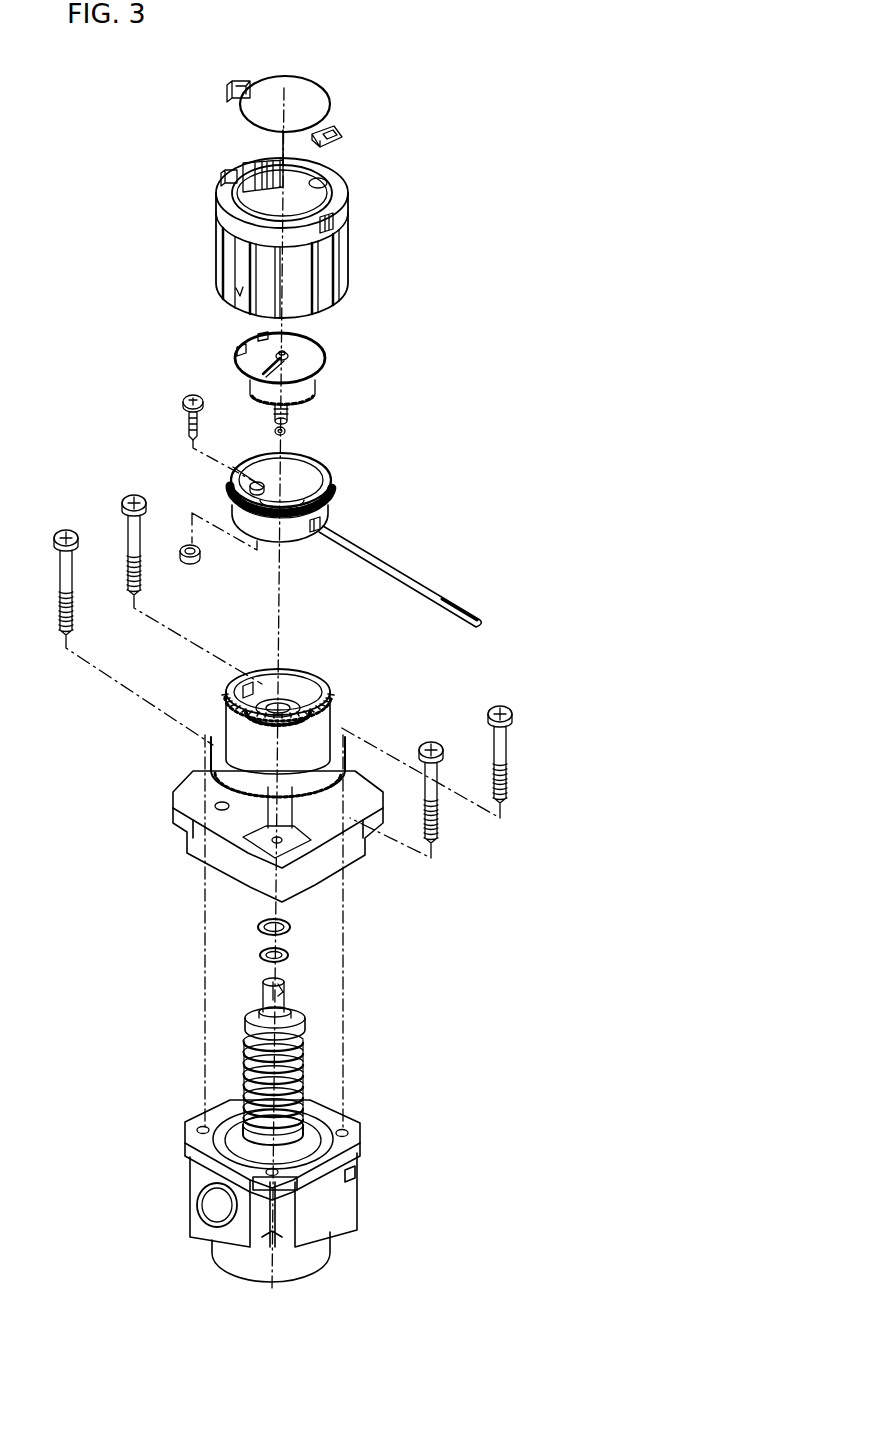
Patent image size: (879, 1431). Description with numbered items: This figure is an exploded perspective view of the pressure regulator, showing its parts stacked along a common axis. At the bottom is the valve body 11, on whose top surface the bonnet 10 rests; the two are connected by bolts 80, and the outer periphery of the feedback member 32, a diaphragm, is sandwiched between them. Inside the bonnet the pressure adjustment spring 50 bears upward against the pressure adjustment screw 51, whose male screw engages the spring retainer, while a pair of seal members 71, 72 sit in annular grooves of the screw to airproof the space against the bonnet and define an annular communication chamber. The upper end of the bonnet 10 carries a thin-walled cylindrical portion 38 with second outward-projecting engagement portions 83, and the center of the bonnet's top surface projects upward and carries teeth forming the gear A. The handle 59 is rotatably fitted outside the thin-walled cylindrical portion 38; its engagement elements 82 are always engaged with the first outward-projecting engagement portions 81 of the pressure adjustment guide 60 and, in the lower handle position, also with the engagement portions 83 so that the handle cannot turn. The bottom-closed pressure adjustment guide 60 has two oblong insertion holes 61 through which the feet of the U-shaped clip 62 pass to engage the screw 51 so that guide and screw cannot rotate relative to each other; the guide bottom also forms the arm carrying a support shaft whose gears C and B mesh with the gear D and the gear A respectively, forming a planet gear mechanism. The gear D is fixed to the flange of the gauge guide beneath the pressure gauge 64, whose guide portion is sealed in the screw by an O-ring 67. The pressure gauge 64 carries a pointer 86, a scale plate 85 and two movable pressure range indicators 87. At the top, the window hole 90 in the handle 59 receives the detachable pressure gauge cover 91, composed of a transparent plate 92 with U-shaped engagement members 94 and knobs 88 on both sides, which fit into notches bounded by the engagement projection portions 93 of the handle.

The bonnet 10 is at (244, 814).
The valve body 11 is at (250, 1169).
The feedback member 32 is at (320, 1111).
The thin-walled cylindrical portion 38 is at (230, 746).
The pressure adjustment spring 50 is at (245, 1051).
The pressure adjustment screw 51 is at (262, 991).
The handle 59 is at (272, 247).
The pressure adjustment guide 60 is at (312, 511).
The oblong insertion holes 61 is at (315, 541).
The clip 62 is at (468, 613).
The pressure gauge 64 is at (285, 365).
The O-ring 67 is at (274, 434).
The seal member 71 is at (297, 923).
The seal member 72 is at (297, 953).
The bolts 80 is at (528, 738).
The first outward-projecting engagement portions 81 is at (336, 489).
The engagement elements 82 is at (240, 193).
The second outward-projecting engagement portions 83 is at (261, 703).
The scale plate 85 is at (312, 357).
The pointer 86 is at (250, 377).
The pressure range indicators 87 is at (238, 355).
The knobs 88 is at (343, 142).
The window hole 90 is at (330, 191).
The pressure gauge cover 91 is at (283, 120).
The transparent plate 92 is at (320, 97).
The engagement projection portions 93 is at (345, 227).
The engagement members 94 is at (282, 144).
The gear A is at (290, 706).
The gear B is at (185, 542).
The gear C is at (173, 405).
The gear D is at (304, 407).